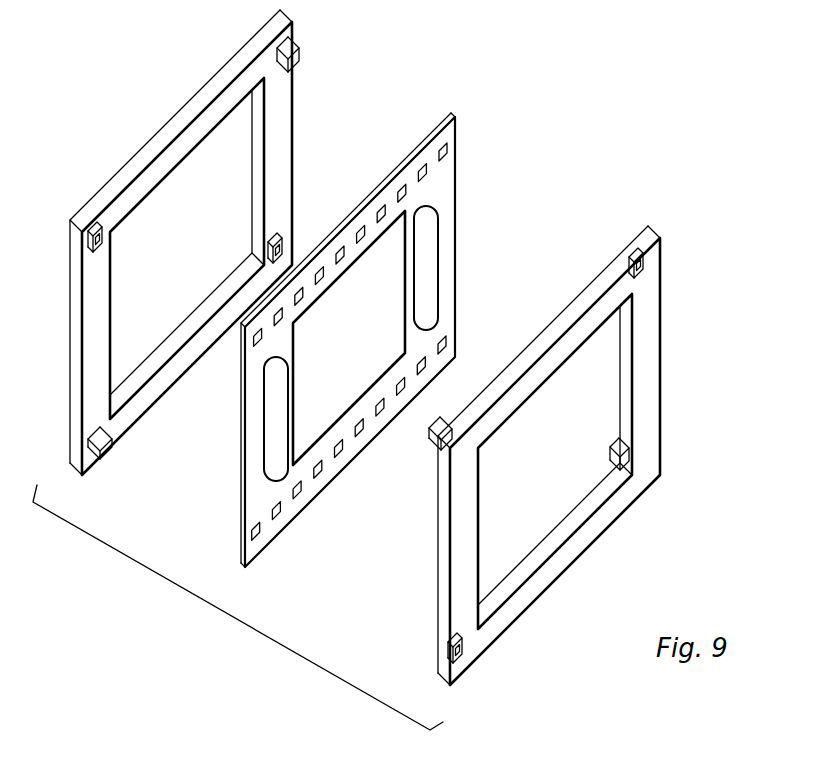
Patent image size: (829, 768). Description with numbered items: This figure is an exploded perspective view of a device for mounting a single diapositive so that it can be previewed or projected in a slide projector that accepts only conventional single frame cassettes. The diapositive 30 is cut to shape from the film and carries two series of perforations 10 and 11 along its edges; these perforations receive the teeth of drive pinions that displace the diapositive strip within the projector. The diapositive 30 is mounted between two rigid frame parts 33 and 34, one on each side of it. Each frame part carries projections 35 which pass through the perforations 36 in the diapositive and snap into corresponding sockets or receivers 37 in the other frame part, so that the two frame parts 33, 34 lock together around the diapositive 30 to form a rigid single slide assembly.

The perforations 10 is at (337, 247).
The perforations 11 is at (338, 462).
The diapositive 30 is at (447, 228).
The rigid frame part 33 is at (283, 118).
The rigid frame part 34 is at (655, 398).
The projections 35 is at (300, 47).
The perforations 36 is at (452, 149).
The sockets or receivers 37 is at (650, 263).